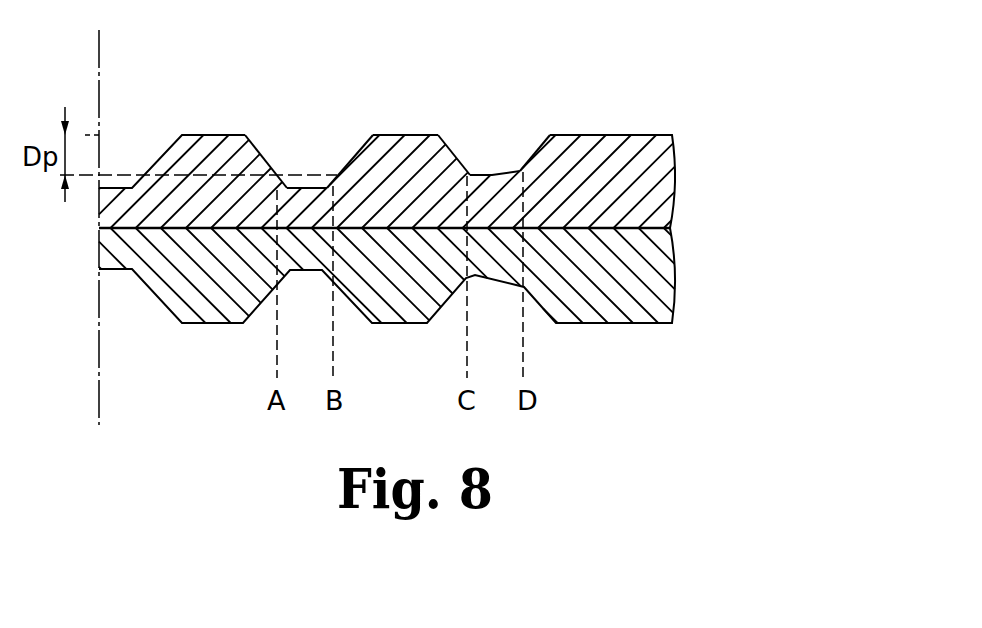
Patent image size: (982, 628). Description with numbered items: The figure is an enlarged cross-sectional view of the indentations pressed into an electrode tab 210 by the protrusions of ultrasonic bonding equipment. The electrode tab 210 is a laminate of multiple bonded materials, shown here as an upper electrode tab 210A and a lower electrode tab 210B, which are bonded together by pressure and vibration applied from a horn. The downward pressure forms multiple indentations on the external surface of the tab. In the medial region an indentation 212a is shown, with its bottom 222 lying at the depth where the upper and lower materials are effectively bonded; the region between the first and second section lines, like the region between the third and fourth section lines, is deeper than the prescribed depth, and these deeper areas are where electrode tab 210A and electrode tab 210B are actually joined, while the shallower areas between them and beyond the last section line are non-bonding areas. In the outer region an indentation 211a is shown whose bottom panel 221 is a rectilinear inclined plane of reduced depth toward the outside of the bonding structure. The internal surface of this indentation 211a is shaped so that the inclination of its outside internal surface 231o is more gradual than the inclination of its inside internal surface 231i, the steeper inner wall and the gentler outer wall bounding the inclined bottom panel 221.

The electrode tab 210 is at (478, 171).
The electrode tab 210A is at (439, 124).
The electrode tab 210B is at (657, 267).
The indentation in the medial region 212a is at (309, 109).
The bottom of first groove 222 is at (308, 187).
The indentation in the outer region 211a is at (525, 97).
The inside internal surface 231i is at (466, 160).
The bottom panel 221 is at (493, 174).
The outside internal surface 231o is at (510, 172).